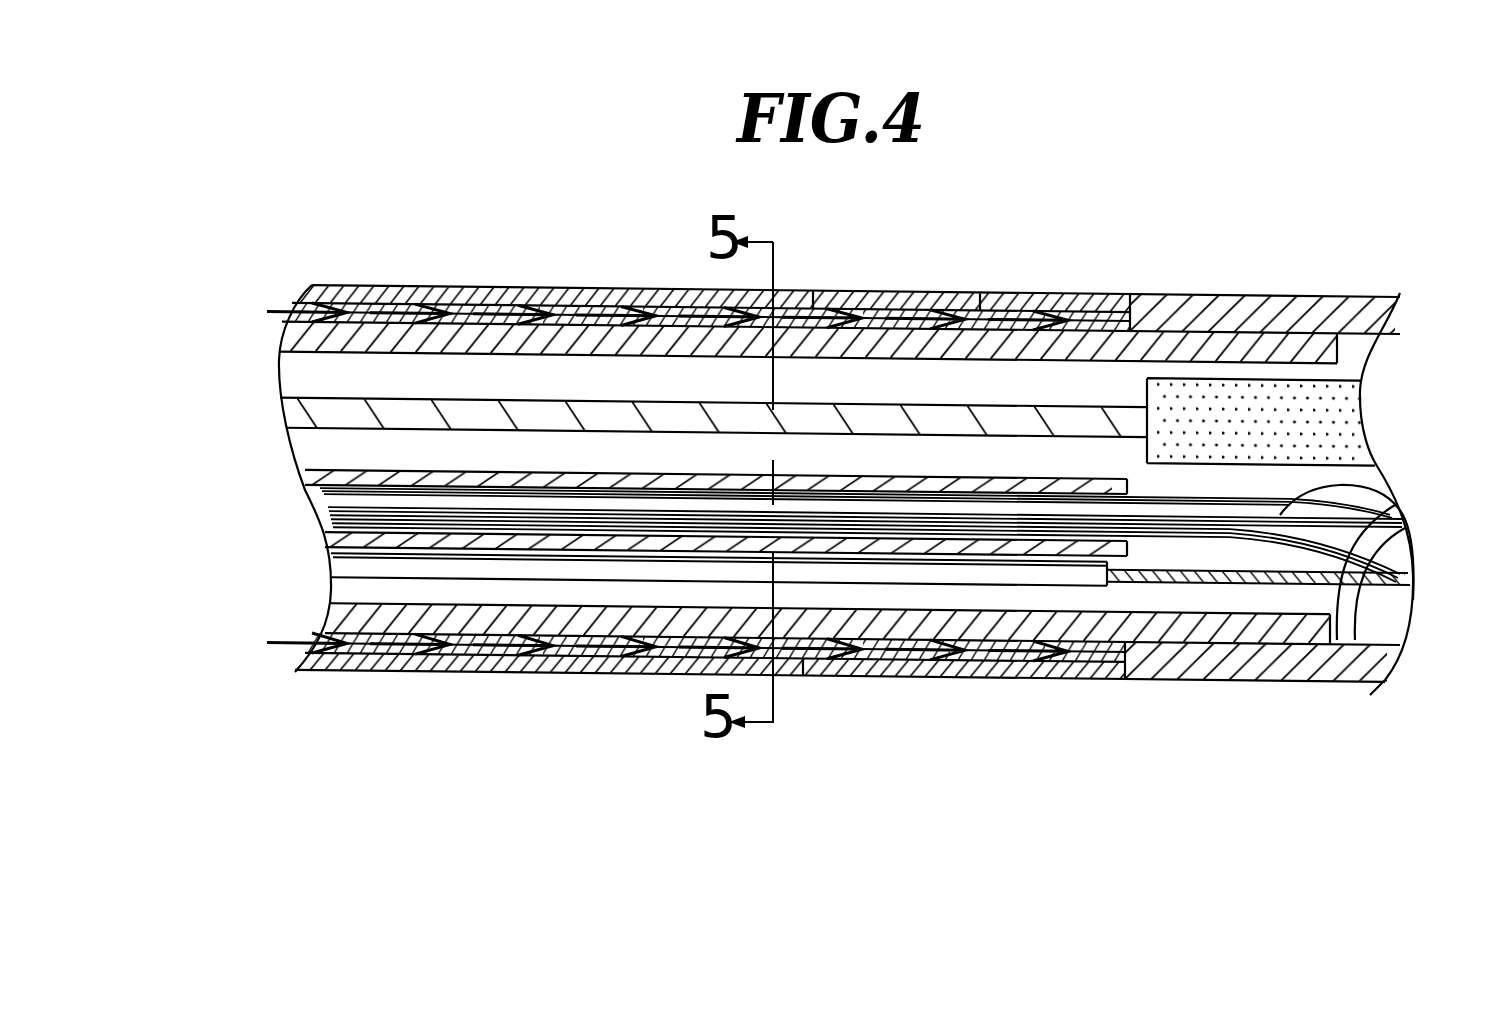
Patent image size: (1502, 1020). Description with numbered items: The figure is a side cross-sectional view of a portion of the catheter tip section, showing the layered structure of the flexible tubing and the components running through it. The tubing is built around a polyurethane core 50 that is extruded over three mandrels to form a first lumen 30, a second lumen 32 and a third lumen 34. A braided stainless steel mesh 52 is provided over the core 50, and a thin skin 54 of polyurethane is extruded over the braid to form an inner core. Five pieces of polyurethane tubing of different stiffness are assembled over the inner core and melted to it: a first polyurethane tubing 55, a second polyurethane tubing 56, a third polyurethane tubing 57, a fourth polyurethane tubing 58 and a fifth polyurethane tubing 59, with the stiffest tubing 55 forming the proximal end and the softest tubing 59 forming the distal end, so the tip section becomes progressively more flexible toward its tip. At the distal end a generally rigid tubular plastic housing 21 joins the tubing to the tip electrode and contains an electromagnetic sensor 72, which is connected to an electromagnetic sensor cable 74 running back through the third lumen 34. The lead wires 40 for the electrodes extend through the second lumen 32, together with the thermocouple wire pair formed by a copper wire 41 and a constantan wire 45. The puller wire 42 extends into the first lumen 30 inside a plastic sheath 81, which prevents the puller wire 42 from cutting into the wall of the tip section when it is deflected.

The plastic housing 21 is at (1232, 298).
The first lumen 30 is at (332, 547).
The second lumen 32 is at (337, 500).
The third lumen 34 is at (307, 371).
The lead wire 40 is at (1355, 640).
The copper wire 41 is at (1238, 524).
The puller wire 42 is at (1285, 577).
The constantan wire 45 is at (1387, 492).
The core 50 is at (845, 338).
The braided stainless steel mesh 52 is at (486, 320).
The thin skin 54 is at (1008, 313).
The 75D polyurethane tubing 55 is at (337, 287).
The 65D polyurethane tubing 56 is at (572, 290).
The 55D polyurethane tubing 57 is at (663, 291).
The 80/20% polyurethane tubing 58 is at (905, 298).
The 80A polyurethane tubing 59 is at (1085, 300).
The electromagnetic sensor 72 is at (1330, 412).
The electromagnetic sensor cable 74 is at (411, 412).
The sheath 81 is at (332, 566).